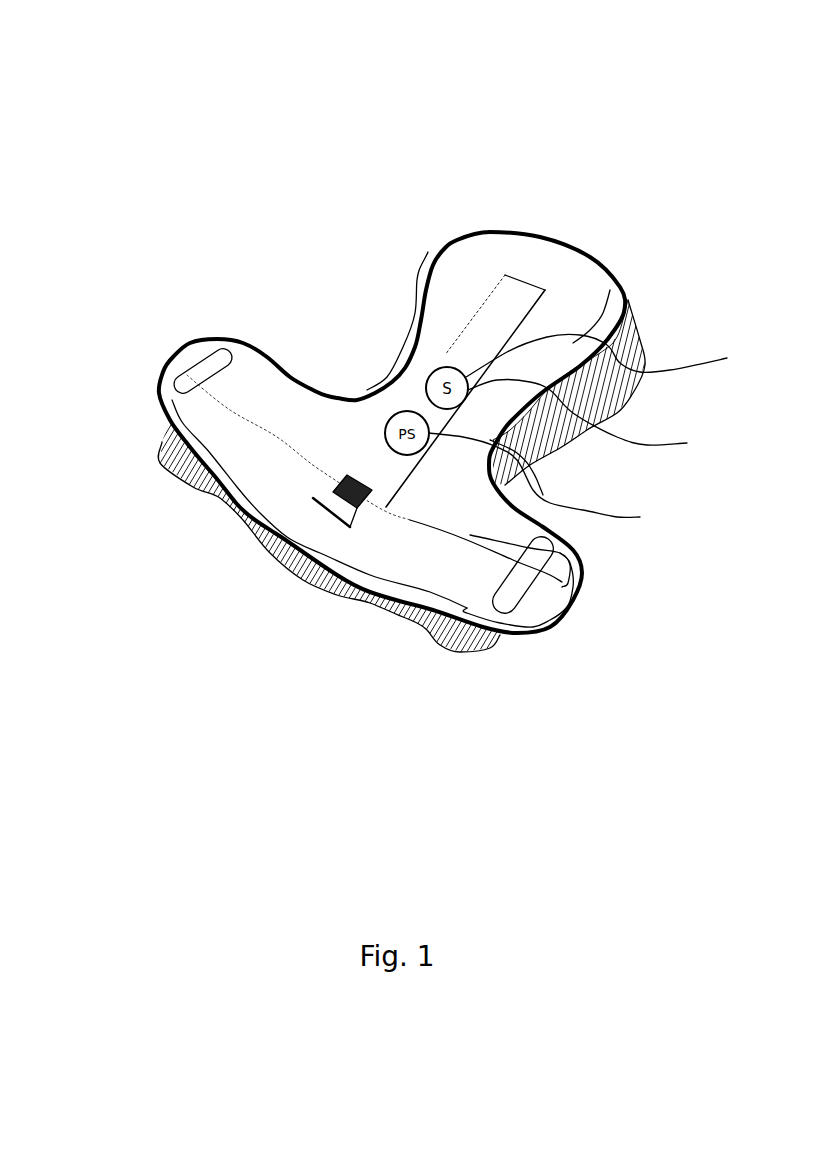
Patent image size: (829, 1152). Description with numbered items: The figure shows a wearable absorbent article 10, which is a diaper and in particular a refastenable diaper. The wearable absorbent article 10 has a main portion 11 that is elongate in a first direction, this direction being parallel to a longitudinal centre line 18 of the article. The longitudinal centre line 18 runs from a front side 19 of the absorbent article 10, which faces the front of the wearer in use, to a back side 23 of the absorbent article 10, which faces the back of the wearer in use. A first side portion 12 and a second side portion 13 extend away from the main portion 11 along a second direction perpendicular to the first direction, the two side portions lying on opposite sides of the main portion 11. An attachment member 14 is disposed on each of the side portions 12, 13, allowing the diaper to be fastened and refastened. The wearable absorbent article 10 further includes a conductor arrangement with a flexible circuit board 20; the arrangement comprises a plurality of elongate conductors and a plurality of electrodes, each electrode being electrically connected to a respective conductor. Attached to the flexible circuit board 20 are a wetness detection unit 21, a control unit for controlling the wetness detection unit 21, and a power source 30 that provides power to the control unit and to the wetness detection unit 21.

The wearable absorbent article 10 is at (497, 157).
The main portion 11 is at (424, 356).
The first side portion 12 is at (467, 592).
The second side portion 13 is at (228, 442).
The attachment members 14 is at (187, 373).
The longitudinal centre line 18 is at (517, 280).
The front side 19 is at (577, 282).
The flexible circuit board 20 is at (598, 390).
The wetness detection unit 21 is at (590, 416).
The back side 23 is at (372, 563).
The power source 30 is at (546, 480).